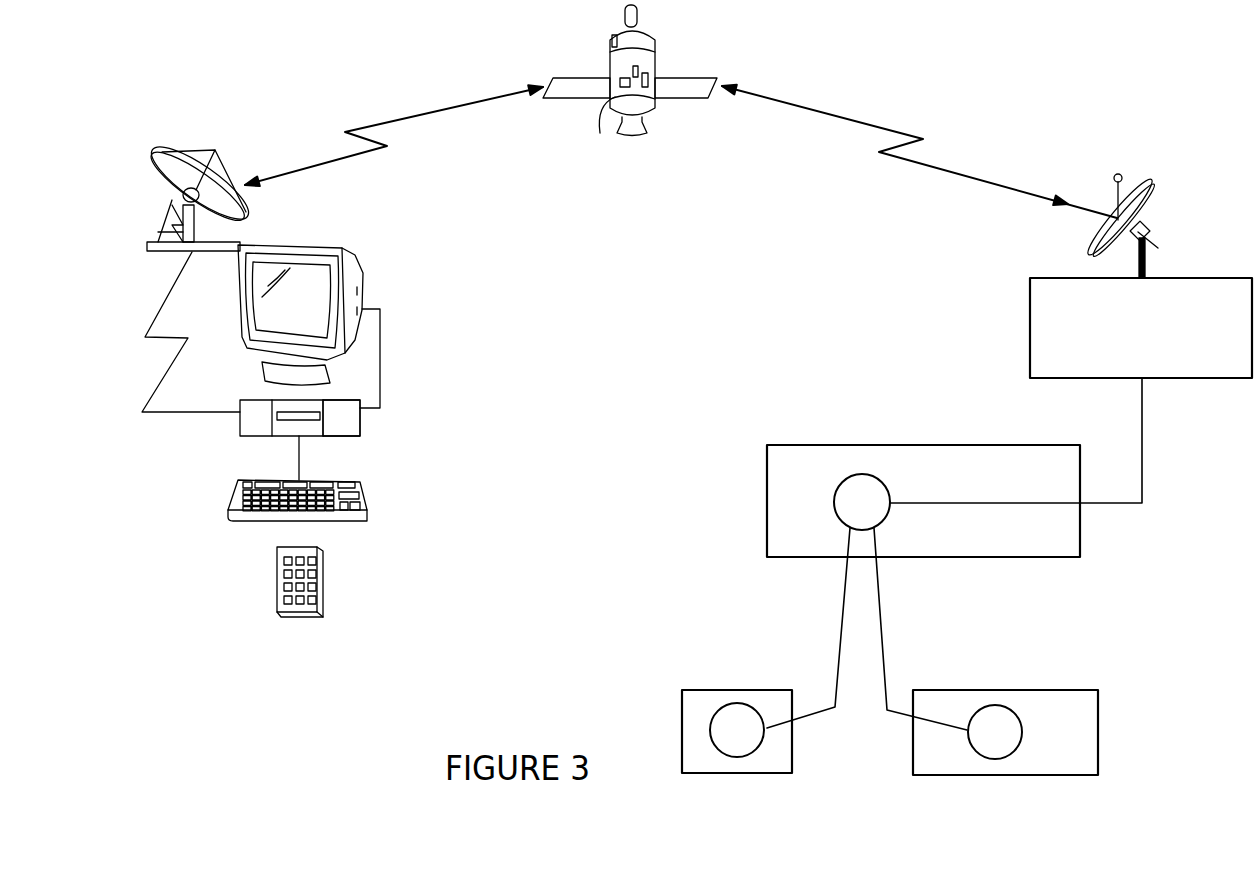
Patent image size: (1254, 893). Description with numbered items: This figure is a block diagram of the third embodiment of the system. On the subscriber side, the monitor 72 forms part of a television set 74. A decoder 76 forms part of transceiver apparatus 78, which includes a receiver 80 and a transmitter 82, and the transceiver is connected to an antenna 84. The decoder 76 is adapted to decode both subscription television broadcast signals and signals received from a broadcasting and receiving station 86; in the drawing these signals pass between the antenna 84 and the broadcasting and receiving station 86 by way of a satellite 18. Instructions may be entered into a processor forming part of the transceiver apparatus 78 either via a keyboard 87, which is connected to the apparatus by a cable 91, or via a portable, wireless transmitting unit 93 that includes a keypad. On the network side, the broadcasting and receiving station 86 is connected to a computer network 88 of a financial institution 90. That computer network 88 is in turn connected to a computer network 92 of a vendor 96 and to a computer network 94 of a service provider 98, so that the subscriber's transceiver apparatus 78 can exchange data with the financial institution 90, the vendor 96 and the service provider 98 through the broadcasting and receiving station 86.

The satellite 18 is at (630, 85).
The monitor 72 is at (307, 273).
The television set 74 is at (362, 272).
The decoder 76 is at (362, 397).
The transceiver apparatus 78 is at (343, 420).
The receiver 80 is at (240, 426).
The transmitter 82 is at (293, 436).
The antenna 84 is at (167, 150).
The broadcasting and receiving station 86 is at (1030, 330).
The keyboard 87 is at (360, 497).
The computer network 88 is at (850, 514).
The financial institution 90 is at (1085, 475).
The cable 91 is at (300, 455).
The computer network 92 is at (725, 742).
The portable wireless transmitting unit 93 is at (295, 620).
The computer network 94 is at (983, 744).
The vendor 96 is at (798, 672).
The service provider 98 is at (1127, 673).